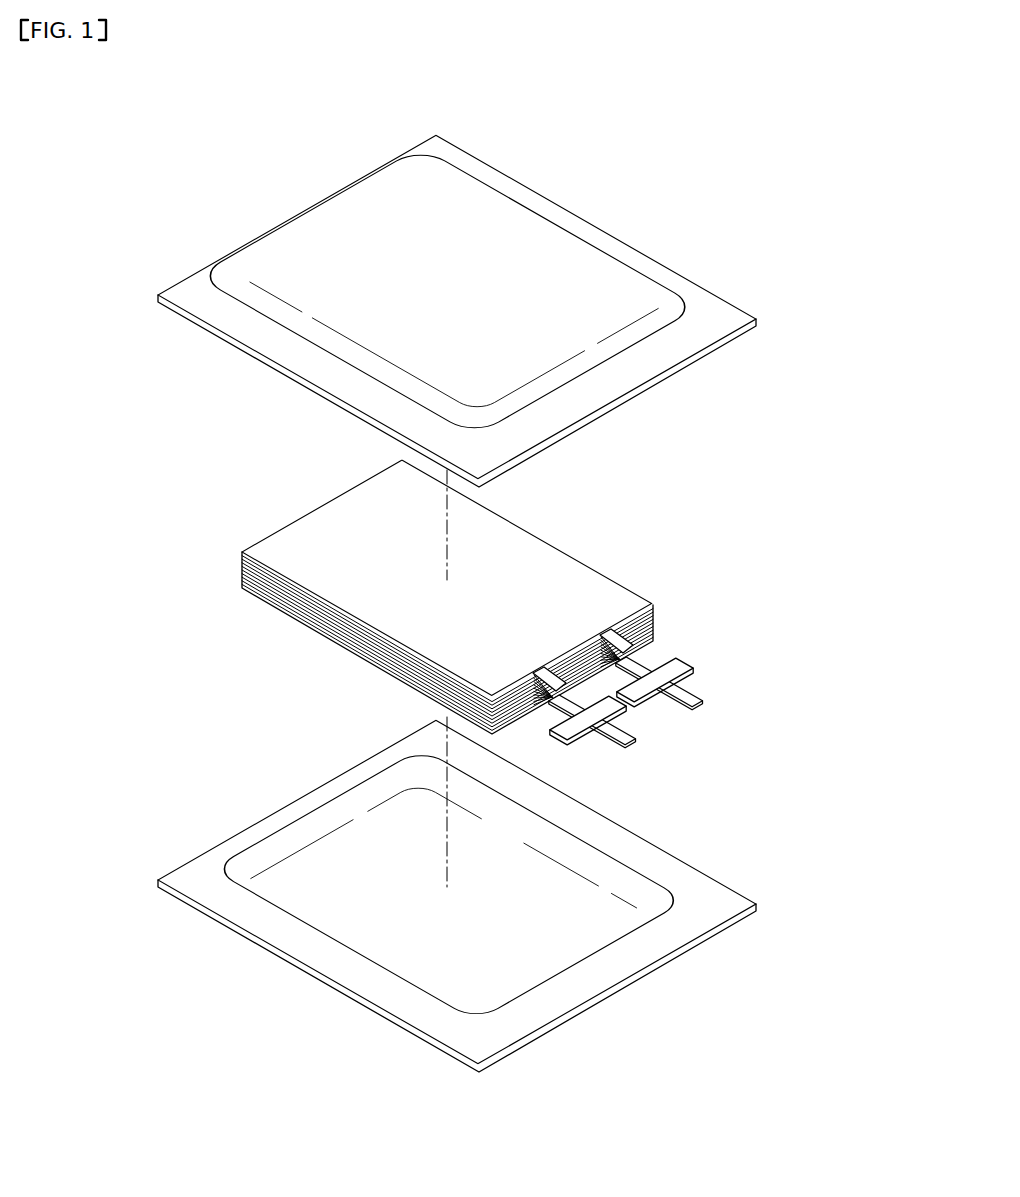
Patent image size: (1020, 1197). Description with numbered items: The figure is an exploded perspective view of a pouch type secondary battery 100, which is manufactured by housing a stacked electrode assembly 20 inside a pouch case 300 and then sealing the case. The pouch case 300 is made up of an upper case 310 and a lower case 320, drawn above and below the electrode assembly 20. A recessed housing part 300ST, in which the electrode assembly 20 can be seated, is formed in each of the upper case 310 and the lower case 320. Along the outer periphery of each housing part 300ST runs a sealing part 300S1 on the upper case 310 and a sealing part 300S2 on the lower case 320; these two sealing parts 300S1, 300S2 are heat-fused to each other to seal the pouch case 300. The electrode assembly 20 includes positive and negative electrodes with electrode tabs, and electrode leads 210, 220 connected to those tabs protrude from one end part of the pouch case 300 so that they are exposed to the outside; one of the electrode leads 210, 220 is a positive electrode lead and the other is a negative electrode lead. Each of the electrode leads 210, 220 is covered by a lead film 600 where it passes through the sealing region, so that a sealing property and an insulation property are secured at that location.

The pouch type secondary battery 100 is at (331, 95).
The electrode assembly 20 is at (214, 561).
The electrode lead 210 is at (627, 738).
The electrode lead 220 is at (694, 692).
The lead film 600 is at (602, 707).
The pouch case 300 is at (847, 512).
The upper case 310 is at (682, 382).
The lower case 320 is at (688, 848).
The sealing part 300S1 is at (247, 321).
The sealing part 300S2 is at (255, 913).
The housing part 300ST is at (527, 231).